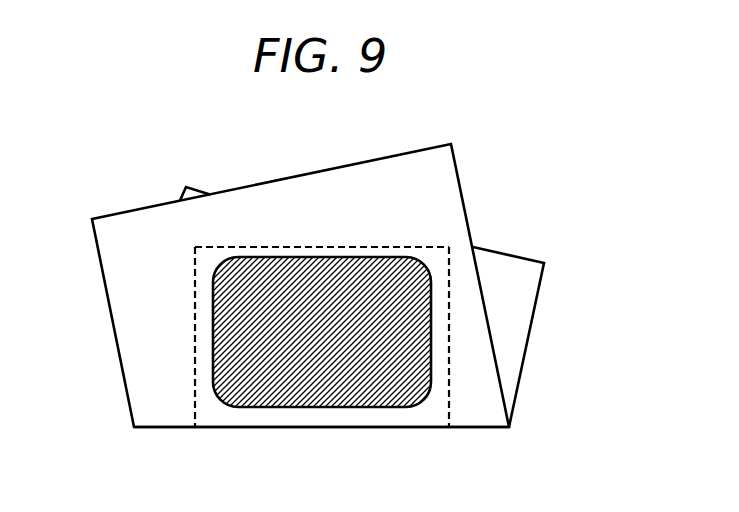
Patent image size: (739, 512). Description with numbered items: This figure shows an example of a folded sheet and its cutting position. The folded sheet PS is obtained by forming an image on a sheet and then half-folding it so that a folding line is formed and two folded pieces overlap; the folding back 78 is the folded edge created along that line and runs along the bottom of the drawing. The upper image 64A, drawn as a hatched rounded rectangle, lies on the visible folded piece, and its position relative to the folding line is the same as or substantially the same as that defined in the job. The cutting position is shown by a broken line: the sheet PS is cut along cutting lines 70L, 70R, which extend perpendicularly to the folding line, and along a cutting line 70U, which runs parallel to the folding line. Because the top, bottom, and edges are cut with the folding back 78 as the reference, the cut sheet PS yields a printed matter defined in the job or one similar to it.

The folded sheet PS is at (143, 207).
The cutting line 70U is at (378, 243).
The cutting line 70L is at (195, 291).
The cutting line 70R is at (449, 322).
The upper image 64A is at (213, 363).
The folding back 78 is at (472, 427).